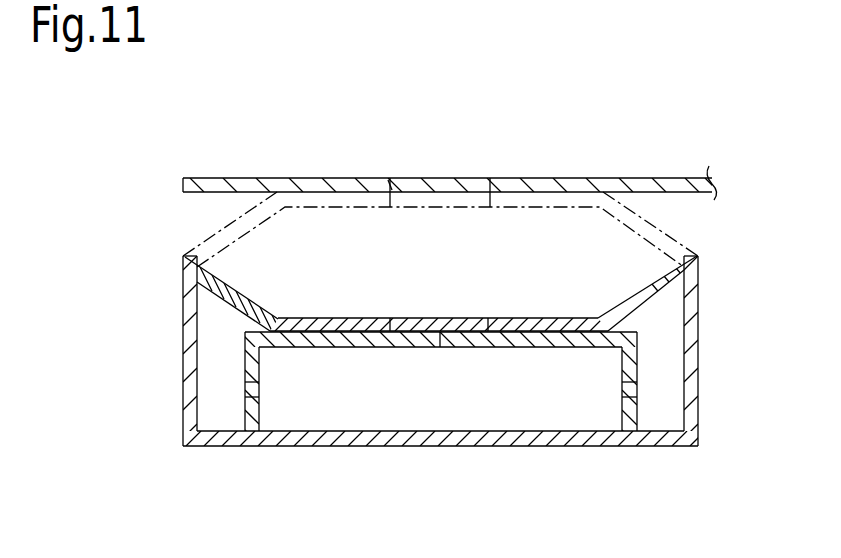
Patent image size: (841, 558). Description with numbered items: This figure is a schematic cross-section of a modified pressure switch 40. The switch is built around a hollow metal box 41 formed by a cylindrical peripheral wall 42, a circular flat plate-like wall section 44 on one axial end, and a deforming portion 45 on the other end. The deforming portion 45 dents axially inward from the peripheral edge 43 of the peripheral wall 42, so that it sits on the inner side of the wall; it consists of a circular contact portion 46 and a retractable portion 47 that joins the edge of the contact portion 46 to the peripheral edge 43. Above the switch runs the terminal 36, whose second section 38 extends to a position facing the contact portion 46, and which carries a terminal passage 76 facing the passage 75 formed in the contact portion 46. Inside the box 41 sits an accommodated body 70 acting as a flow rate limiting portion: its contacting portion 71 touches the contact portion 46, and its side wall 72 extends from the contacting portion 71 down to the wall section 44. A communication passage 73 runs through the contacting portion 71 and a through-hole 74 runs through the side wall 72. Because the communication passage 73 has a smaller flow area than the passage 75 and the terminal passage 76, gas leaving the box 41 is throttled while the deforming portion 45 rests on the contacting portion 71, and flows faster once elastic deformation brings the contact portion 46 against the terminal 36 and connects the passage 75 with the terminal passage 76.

The terminal 36 is at (653, 176).
The second section 38 is at (562, 187).
The pressure switch 40 is at (405, 354).
The box 41 is at (184, 366).
The peripheral wall 42 is at (190, 403).
The peripheral edge 43 is at (668, 288).
The wall section 44 is at (451, 438).
The deforming portion 45 is at (396, 274).
The contact portion 46 is at (335, 318).
The retractable portion 47 is at (256, 313).
The accommodated body 70 is at (490, 358).
The contacting portion 71 is at (366, 340).
The side wall 72 is at (262, 371).
The communication passage 73 is at (443, 345).
The through-hole 74 is at (262, 392).
The passage 75 is at (490, 328).
The terminal passage 76 is at (391, 178).